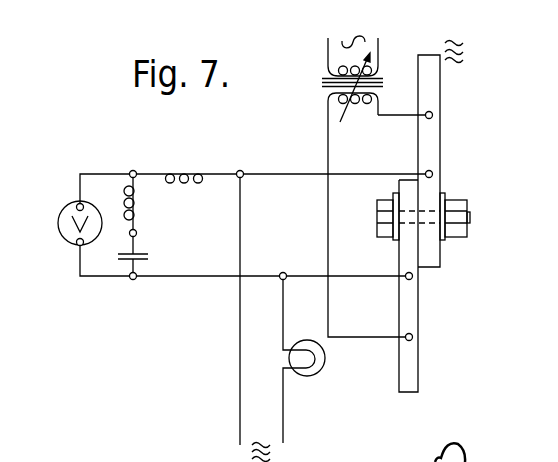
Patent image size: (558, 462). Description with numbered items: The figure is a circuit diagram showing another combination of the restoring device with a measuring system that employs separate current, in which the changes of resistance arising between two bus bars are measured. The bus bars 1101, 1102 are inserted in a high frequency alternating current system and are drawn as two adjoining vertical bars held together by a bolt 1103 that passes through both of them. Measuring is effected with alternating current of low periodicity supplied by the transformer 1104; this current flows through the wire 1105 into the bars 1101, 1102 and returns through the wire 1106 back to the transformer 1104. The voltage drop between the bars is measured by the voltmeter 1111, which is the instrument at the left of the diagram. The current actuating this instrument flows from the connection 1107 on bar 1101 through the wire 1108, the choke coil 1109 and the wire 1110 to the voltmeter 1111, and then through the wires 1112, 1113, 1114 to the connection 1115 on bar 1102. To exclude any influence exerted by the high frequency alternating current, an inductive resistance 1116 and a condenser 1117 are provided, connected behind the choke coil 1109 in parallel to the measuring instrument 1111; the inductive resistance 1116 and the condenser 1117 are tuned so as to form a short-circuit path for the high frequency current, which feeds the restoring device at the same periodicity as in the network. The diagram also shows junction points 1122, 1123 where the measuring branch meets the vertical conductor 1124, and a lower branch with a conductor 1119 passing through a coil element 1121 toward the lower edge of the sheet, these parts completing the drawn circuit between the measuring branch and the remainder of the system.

The bus bar 1101 is at (442, 93).
The bus bar 1102 is at (419, 375).
The bolt 1103 is at (470, 219).
The transformer 1104 is at (320, 87).
The wire 1105 is at (392, 116).
The wire 1106 is at (325, 163).
The connection 1107 is at (441, 174).
The wire 1108 is at (369, 170).
The choke coil 1109 is at (186, 169).
The wire 1110 is at (100, 173).
The voltmeter 1111 is at (58, 226).
The wire 1112 is at (107, 281).
The wire 1113 is at (192, 283).
The wire 1114 is at (358, 275).
The connection 1115 is at (413, 278).
The inductive resistance 1116 is at (139, 201).
The condenser 1117 is at (155, 258).
The conductor 1119 is at (285, 400).
The current sensor 1121 is at (325, 366).
The node 1122 is at (287, 272).
The node 1123 is at (246, 178).
The conductor 1124 is at (243, 237).